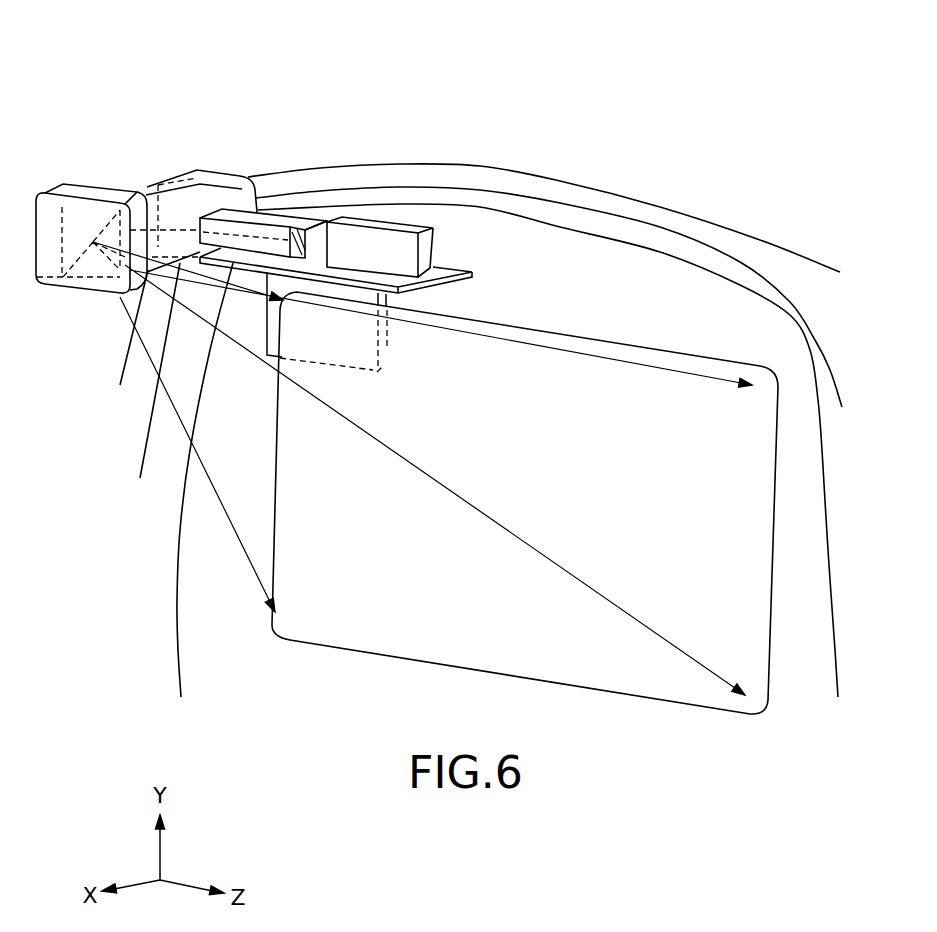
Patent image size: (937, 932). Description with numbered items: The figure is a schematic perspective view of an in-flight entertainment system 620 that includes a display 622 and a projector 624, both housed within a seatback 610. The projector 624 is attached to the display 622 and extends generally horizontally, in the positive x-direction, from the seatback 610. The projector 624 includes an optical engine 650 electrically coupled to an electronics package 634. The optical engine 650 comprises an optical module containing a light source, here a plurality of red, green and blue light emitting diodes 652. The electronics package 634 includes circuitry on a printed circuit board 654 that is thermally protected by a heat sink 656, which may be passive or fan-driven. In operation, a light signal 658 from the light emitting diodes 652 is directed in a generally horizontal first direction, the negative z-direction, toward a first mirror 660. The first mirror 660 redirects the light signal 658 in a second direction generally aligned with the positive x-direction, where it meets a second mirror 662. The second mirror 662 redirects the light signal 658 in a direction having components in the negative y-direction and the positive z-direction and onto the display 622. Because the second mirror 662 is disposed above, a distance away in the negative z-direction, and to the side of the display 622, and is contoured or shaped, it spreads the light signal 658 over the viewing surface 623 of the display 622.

The seatback 610 is at (705, 211).
The in-flight entertainment system 620 is at (259, 104).
The display 622 is at (652, 680).
The viewing surface 623 is at (386, 617).
The projector 624 is at (34, 194).
The electronics package 634 is at (360, 313).
The optical engine 650 is at (293, 230).
The red, green and blue light emitting diodes 652 is at (333, 223).
The printed circuit board 654 is at (357, 358).
The heat sink 656 is at (393, 254).
The light signal 658 is at (260, 236).
The first mirror 660 is at (181, 178).
The second mirror 662 is at (62, 252).